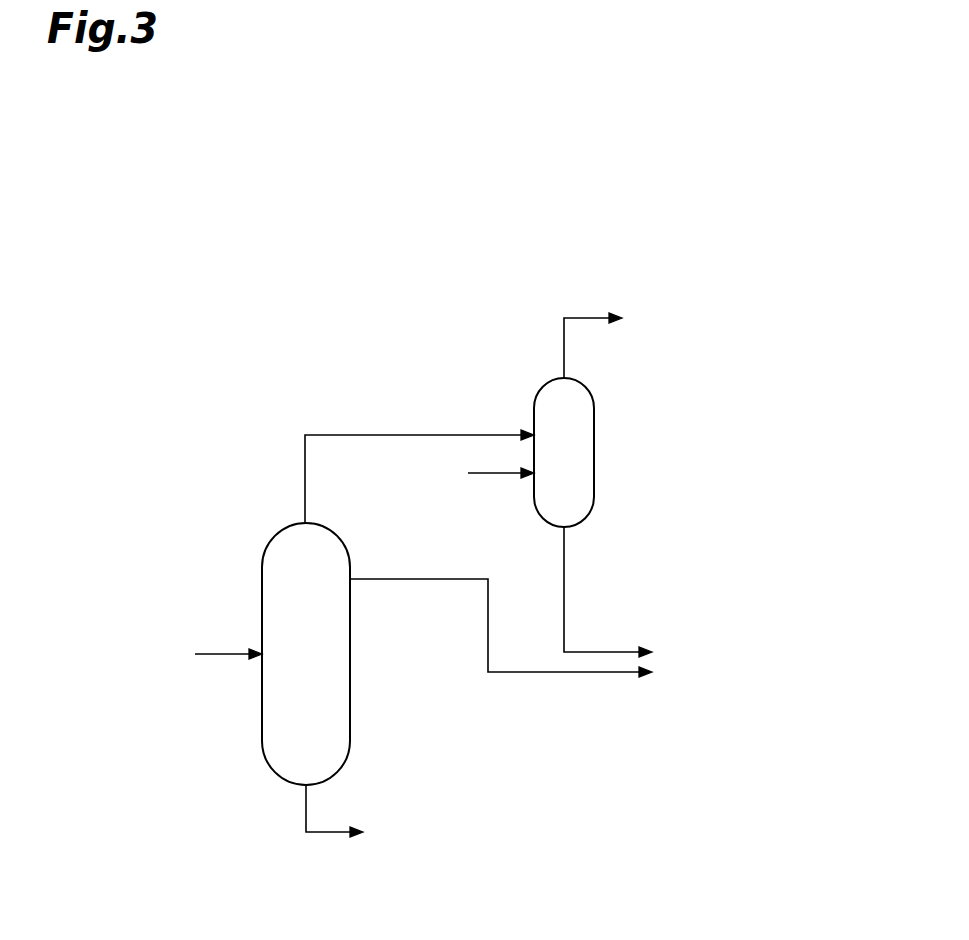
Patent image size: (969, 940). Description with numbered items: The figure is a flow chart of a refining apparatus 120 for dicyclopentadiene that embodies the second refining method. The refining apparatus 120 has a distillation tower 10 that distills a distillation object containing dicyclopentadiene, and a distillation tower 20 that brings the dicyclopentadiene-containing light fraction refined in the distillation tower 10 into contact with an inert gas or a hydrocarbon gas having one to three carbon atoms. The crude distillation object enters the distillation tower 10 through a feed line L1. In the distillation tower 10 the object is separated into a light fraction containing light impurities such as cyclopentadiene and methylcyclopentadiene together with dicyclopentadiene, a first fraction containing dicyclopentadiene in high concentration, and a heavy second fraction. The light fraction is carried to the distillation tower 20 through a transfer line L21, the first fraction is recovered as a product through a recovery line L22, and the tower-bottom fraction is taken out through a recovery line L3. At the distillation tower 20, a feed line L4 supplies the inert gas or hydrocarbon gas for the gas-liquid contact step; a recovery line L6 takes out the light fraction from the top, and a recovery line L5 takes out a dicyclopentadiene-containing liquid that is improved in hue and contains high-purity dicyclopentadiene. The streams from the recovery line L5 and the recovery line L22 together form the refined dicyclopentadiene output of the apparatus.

The refining apparatus 120 is at (727, 177).
The distillation tower 10 is at (350, 709).
The distillation tower 20 is at (594, 465).
The feed line L1 is at (222, 655).
The recovery line L3 is at (330, 833).
The transfer line L21 is at (413, 435).
The feed line L4 is at (500, 474).
The recovery line L6 is at (584, 318).
The recovery line L5 is at (564, 590).
The recovery line L22 is at (537, 673).